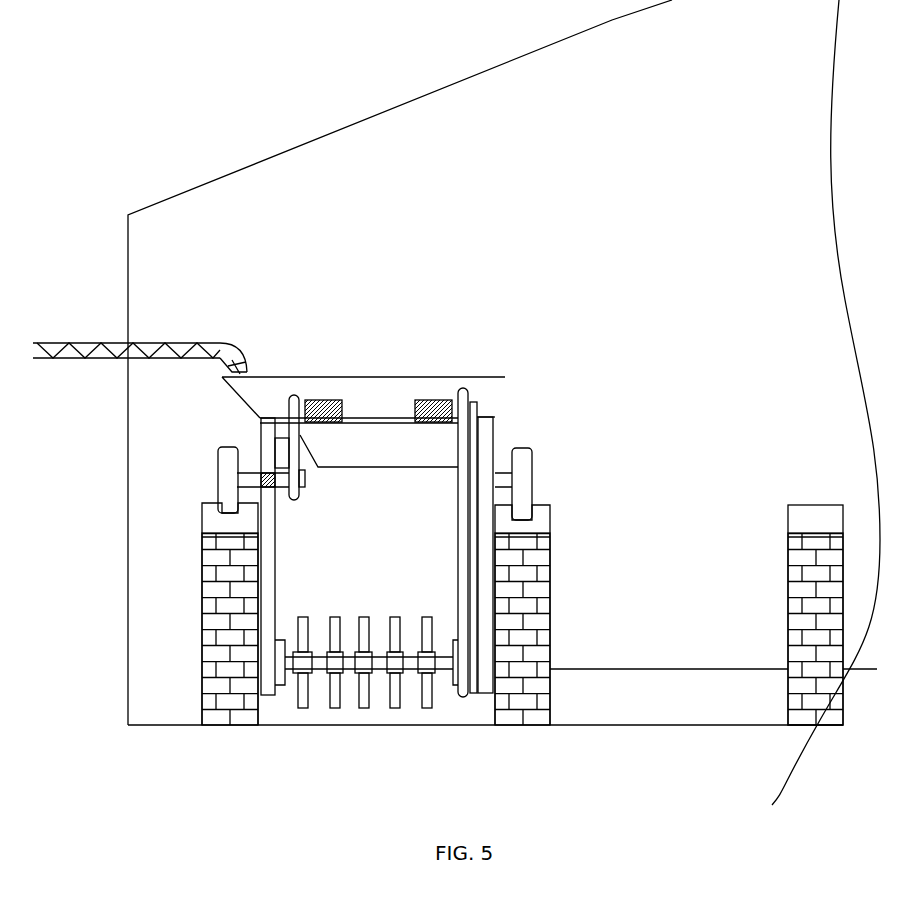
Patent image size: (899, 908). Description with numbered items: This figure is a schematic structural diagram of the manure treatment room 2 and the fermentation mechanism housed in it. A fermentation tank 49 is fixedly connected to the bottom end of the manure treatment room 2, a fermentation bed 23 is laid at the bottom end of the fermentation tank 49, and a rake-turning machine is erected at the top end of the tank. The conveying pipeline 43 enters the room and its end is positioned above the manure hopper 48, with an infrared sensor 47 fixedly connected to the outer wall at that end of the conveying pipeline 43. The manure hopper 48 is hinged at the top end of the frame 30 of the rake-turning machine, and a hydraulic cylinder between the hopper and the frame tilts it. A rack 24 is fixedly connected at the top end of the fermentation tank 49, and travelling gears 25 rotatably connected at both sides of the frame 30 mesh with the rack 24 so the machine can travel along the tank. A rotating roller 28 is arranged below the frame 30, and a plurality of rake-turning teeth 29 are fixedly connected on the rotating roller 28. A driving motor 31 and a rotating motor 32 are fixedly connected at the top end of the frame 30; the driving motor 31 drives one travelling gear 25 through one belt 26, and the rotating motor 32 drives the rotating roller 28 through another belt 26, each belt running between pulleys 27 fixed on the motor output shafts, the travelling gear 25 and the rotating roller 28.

The manure treatment room 2 is at (128, 478).
The fermentation bed 23 is at (453, 712).
The rack 24 is at (543, 522).
The travelling gear 25 is at (522, 468).
The belt 26 is at (469, 404).
The pulley 27 is at (494, 418).
The rotating roller 28 is at (290, 662).
The rake-turning tooth 29 is at (303, 628).
The frame 30 is at (381, 450).
The driving motor 31 is at (325, 400).
The rotating motor 32 is at (445, 400).
The conveying pipeline 43 is at (104, 346).
The infrared sensor 47 is at (247, 365).
The manure hopper 48 is at (375, 387).
The fermentation tank 49 is at (543, 618).